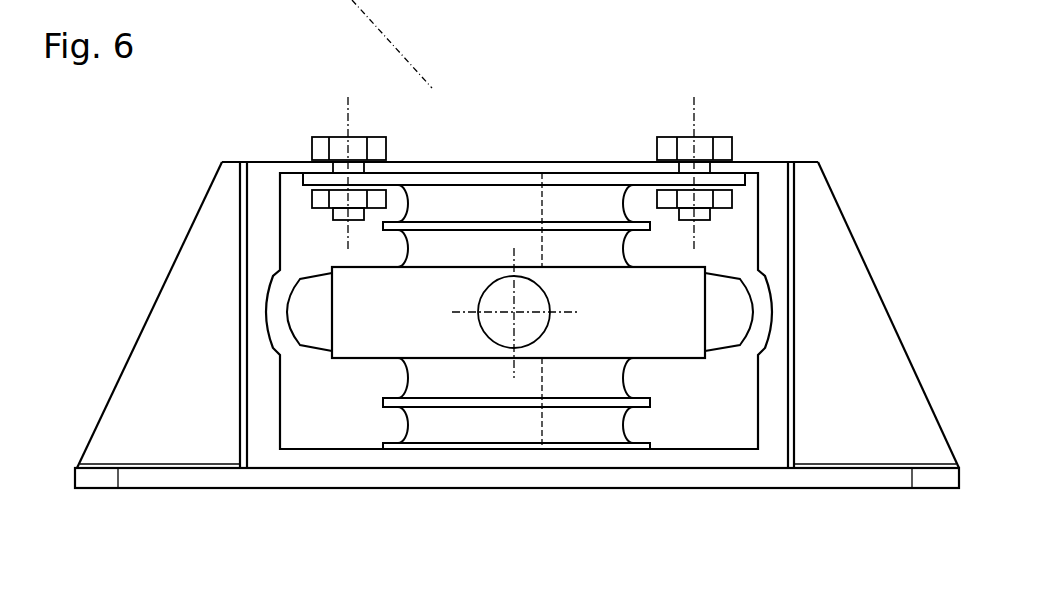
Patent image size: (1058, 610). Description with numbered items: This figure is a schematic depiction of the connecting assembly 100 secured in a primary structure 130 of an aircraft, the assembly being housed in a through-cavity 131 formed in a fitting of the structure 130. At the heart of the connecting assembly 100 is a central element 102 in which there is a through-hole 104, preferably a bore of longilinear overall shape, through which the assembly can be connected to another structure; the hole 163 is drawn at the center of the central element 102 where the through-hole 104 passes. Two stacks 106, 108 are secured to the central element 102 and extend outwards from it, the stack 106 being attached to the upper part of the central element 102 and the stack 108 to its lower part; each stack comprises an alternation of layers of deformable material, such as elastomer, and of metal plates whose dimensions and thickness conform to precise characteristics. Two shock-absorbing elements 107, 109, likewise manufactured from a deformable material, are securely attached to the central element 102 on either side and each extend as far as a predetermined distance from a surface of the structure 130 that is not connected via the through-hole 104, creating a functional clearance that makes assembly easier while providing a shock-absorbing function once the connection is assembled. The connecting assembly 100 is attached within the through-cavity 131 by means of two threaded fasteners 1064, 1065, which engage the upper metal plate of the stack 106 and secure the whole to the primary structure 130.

The connecting assembly 100 is at (378, 380).
The central element 102 is at (667, 337).
The through-hole 104 is at (505, 328).
The stack 106 is at (530, 222).
The shock-absorbing element 107 is at (720, 312).
The stack 108 is at (552, 413).
The shock-absorbing element 109 is at (313, 323).
The primary structure 130 is at (178, 278).
The through-cavity 131 is at (315, 247).
The center hole 163 is at (517, 313).
The threaded fastener 1064 is at (675, 116).
The threaded fastener 1065 is at (325, 118).